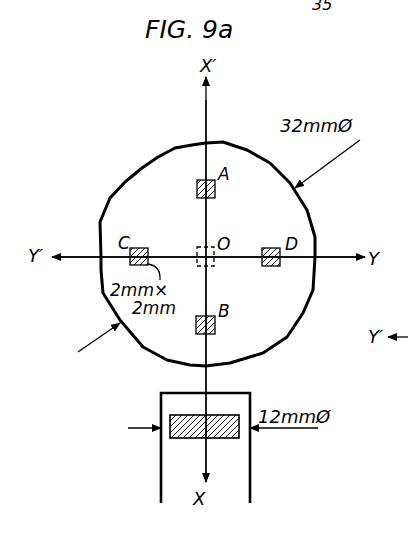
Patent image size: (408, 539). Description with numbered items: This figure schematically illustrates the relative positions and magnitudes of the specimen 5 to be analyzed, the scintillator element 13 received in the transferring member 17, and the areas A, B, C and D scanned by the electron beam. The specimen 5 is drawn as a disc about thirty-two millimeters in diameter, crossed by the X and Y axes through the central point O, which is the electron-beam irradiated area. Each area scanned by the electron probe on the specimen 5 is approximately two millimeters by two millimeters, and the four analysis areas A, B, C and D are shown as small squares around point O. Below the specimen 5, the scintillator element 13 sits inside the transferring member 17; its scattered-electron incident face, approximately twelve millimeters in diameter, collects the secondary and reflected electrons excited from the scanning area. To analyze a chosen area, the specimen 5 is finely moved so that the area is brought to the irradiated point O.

The specimen 5 is at (302, 302).
The scintillator element 13 is at (183, 420).
The transferring member 17 is at (245, 477).